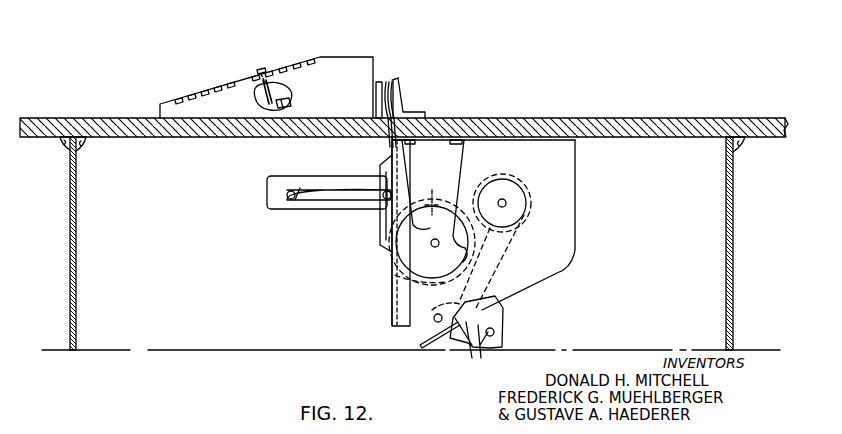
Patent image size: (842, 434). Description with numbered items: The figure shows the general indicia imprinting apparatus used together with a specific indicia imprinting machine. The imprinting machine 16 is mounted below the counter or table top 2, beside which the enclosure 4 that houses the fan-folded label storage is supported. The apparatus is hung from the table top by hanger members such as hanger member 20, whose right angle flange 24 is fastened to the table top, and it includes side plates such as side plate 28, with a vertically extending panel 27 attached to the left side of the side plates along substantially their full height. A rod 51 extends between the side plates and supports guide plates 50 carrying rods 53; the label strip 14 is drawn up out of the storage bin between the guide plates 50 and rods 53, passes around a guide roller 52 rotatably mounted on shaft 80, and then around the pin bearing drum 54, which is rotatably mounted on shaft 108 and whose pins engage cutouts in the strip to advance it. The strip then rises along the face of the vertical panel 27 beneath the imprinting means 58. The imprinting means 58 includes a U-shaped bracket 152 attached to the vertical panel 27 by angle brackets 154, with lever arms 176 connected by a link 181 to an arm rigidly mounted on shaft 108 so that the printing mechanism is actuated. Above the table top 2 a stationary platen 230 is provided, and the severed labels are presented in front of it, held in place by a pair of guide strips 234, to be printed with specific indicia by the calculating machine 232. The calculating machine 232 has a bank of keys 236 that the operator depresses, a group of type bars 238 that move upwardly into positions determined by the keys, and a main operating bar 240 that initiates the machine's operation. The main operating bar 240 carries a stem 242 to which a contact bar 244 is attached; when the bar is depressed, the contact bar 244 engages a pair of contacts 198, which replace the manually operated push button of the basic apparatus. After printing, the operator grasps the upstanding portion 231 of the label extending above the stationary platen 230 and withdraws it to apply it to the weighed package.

The table top 2 is at (532, 126).
The enclosure 4 is at (68, 266).
The label strip 14 is at (505, 262).
The imprinting machine 16 is at (350, 269).
The hanger member 20 is at (464, 156).
The flange 24 is at (420, 142).
The vertical panel 27 is at (390, 307).
The side plate 28 is at (576, 202).
The guide plates 50 is at (505, 315).
The rod 51 is at (430, 332).
The guide roller 52 is at (520, 186).
The rods 53 is at (474, 352).
The pin bearing drum 54 is at (432, 230).
The imprinting means 58 is at (327, 221).
The shaft 80 is at (500, 207).
The shaft 108 is at (435, 247).
The U-shaped bracket 152 is at (270, 195).
The angle brackets 154 is at (385, 228).
The lever arms 176 is at (300, 201).
The link 181 is at (339, 192).
The contacts 198 is at (302, 107).
The stationary platen 230 is at (402, 100).
The upstanding portion 231 is at (398, 78).
The specific indicia imprinting means 232 is at (197, 56).
The guide strips 234 is at (386, 80).
The keys 236 is at (203, 90).
The type bars 238 is at (392, 80).
The main operating bar 240 is at (259, 70).
The stem 242 is at (256, 96).
The contact bar 244 is at (282, 90).